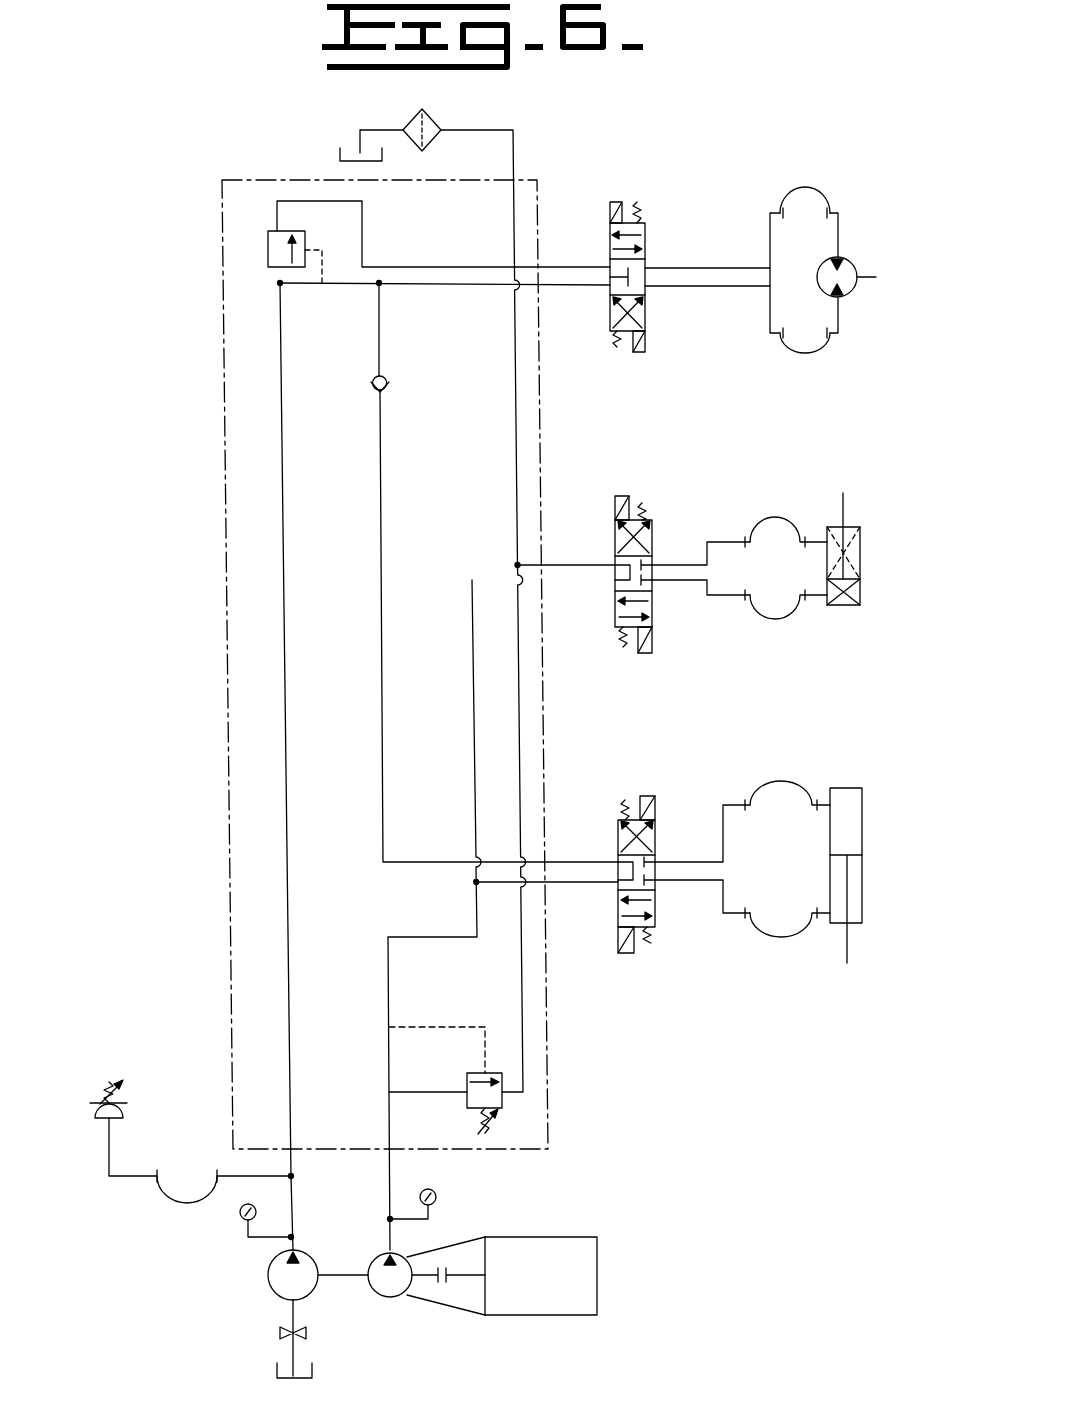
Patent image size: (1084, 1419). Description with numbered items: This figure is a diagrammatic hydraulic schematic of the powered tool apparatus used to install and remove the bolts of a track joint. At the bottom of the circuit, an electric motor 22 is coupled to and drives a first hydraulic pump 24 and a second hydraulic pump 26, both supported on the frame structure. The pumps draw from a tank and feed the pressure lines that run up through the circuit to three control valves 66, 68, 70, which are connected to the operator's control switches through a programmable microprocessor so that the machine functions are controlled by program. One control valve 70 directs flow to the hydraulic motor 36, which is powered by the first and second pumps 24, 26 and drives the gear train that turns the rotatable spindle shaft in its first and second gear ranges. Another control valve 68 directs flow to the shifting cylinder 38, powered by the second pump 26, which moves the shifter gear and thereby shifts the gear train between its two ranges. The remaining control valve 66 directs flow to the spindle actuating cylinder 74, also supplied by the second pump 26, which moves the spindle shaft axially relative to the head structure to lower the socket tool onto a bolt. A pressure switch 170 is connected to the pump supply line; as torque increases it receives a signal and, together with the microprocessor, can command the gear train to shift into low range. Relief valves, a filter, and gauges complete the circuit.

The electric motor 22 is at (597, 1275).
The first hydraulic pump 24 is at (393, 1292).
The second hydraulic pump 26 is at (270, 1278).
The hydraulic motor 36 is at (850, 263).
The shifting cylinder 38 is at (858, 551).
The control valve 66 is at (653, 837).
The control valve 68 is at (652, 585).
The control valve 70 is at (647, 267).
The spindle actuating cylinder 74 is at (857, 836).
The pressure switch 170 is at (125, 1088).